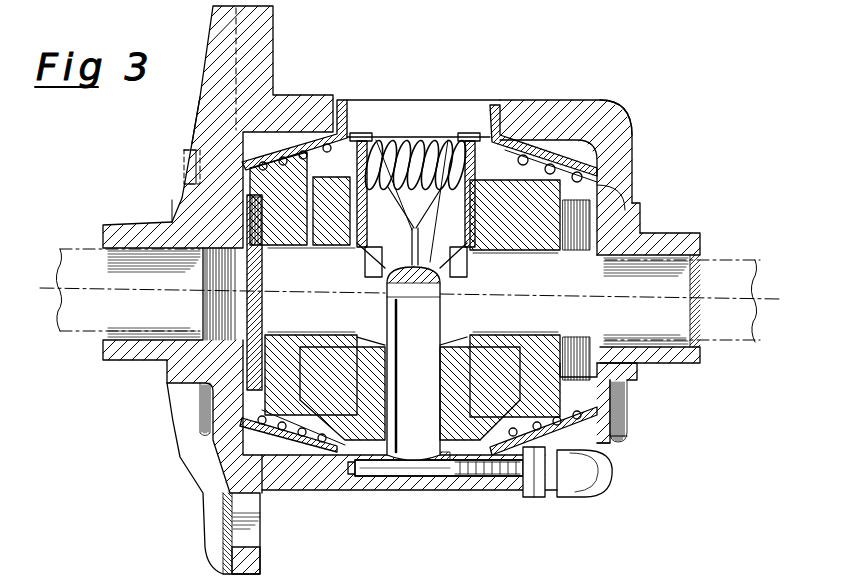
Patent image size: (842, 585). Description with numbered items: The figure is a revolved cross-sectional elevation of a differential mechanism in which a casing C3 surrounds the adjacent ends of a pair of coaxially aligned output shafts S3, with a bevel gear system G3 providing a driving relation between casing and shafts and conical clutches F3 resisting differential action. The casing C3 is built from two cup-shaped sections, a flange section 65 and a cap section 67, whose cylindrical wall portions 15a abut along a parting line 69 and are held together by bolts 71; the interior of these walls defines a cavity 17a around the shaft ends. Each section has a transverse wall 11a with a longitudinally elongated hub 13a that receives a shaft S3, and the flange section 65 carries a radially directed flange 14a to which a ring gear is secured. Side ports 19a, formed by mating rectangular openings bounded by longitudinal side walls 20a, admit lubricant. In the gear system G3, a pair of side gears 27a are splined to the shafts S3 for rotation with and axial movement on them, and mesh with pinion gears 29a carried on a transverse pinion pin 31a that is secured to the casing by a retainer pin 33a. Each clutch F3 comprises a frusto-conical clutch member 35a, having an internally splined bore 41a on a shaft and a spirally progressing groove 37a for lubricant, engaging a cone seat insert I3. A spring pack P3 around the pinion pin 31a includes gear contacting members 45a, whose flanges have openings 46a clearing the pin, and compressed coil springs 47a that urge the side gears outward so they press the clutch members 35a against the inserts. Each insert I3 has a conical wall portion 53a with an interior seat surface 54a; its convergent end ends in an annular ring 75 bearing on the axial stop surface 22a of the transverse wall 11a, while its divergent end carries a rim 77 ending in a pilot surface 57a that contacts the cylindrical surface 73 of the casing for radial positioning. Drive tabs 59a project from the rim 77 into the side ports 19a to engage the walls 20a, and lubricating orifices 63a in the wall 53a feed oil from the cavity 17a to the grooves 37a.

The radially directed flange 14a is at (275, 8).
The flange section 65 is at (199, 99).
The bolts 71 is at (184, 167).
The transverse wall 11a is at (172, 206).
The hub 13a is at (108, 226).
The output shafts S3 is at (72, 248).
The drive tabs 59a is at (342, 100).
The side walls 20a is at (381, 100).
The spring pack P3 is at (425, 158).
The coil springs 47a is at (400, 145).
The parting line 69 is at (432, 125).
The openings 46a is at (462, 150).
The side ports 19a is at (477, 215).
The gear contacting members 45a is at (520, 170).
The spirally progressing groove 37a is at (583, 108).
The cap section 67 is at (618, 128).
The conical wall portion 53a is at (603, 168).
The conical seat surface 54a is at (605, 185).
The axial stop surface 22a is at (628, 190).
The internally splined bore 41a is at (565, 355).
The side gears 27a is at (510, 343).
The frusto-conical clutch member 35a is at (622, 408).
The annular ring 75 is at (622, 427).
The lubricating orifices 63a is at (582, 463).
The cylindrical surfaces 73 is at (557, 463).
The retainer pin 33a is at (537, 496).
The cylindrical wall portions 15a is at (503, 490).
The pilot surface 57a is at (484, 487).
The rim 77 is at (460, 475).
The pinion gears 29a is at (457, 480).
The pinion pin 31a is at (399, 450).
The bevel gear system G3 is at (343, 410).
The cavity 17a is at (313, 452).
The cone seat inserts I3 is at (289, 458).
The conical clutches F3 is at (232, 425).
The casing C3 is at (200, 456).